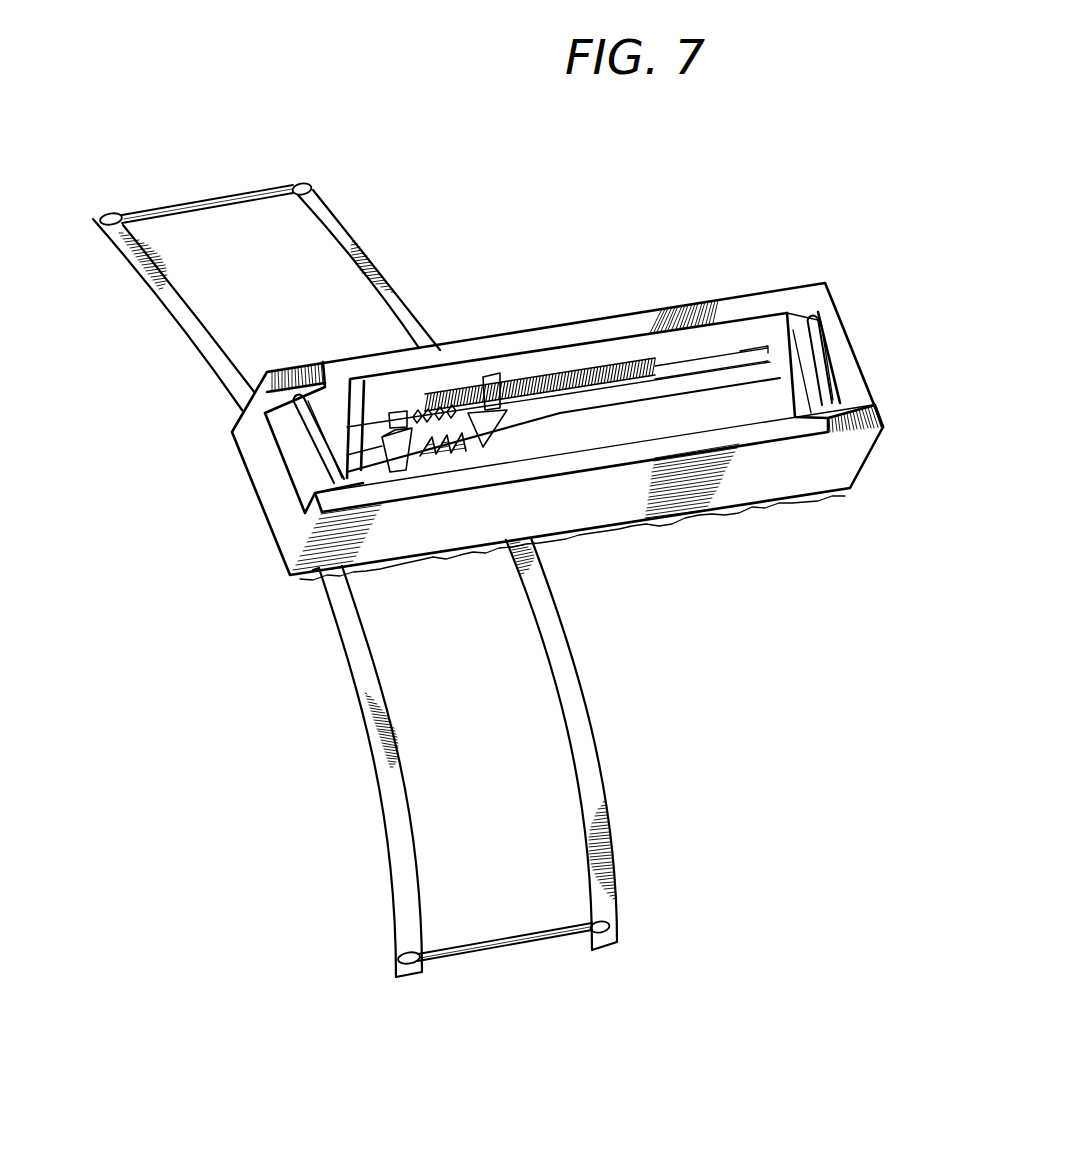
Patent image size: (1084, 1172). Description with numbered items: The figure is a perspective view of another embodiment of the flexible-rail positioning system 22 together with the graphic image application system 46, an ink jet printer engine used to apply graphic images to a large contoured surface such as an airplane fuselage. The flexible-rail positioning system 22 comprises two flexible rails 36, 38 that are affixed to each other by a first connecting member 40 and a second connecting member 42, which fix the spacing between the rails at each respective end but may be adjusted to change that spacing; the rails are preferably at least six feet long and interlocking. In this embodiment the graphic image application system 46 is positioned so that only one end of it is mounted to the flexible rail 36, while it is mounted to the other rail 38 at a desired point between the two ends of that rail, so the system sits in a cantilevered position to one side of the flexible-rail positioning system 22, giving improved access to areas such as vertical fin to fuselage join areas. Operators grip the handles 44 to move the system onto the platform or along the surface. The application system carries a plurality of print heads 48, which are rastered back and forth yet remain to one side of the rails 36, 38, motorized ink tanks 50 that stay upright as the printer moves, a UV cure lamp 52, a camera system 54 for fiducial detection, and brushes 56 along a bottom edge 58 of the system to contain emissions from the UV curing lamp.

The flexible-rail positioning system 22 is at (588, 713).
The flexible rail 36 is at (187, 322).
The flexible rail 38 is at (353, 224).
The first connecting member 40 is at (204, 199).
The second connecting member 42 is at (518, 955).
The handles 44 is at (313, 455).
The graphic image application system 46 is at (584, 340).
The print heads 48 is at (455, 453).
The ink tanks 50 is at (442, 420).
The UV cure lamp 52 is at (410, 462).
The camera system 54 is at (496, 378).
The brushes 56 is at (744, 513).
The bottom edge 58 is at (583, 526).